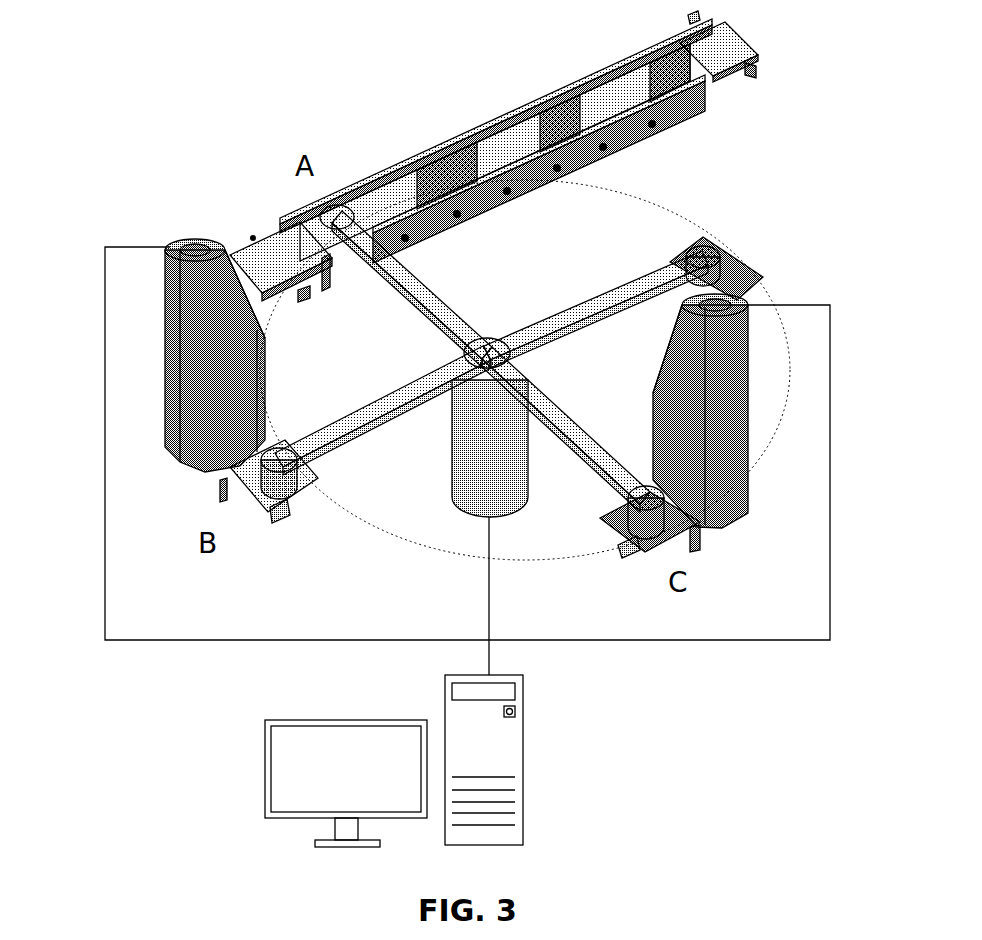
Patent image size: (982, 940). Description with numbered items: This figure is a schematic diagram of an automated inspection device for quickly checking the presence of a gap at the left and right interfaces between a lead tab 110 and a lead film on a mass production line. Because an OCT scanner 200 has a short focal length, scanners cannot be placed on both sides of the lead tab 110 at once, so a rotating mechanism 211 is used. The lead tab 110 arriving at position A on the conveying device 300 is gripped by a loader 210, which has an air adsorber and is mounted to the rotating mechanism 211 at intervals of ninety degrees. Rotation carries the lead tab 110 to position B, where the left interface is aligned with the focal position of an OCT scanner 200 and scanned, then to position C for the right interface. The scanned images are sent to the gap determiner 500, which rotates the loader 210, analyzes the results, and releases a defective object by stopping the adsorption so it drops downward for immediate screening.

The lead tab 110 is at (543, 125).
The conveying device 300 is at (758, 72).
The OCT scanner 200 is at (185, 360).
The loader 210 is at (740, 240).
The rotating mechanism 211 is at (488, 460).
The gap determiner 500 is at (523, 760).